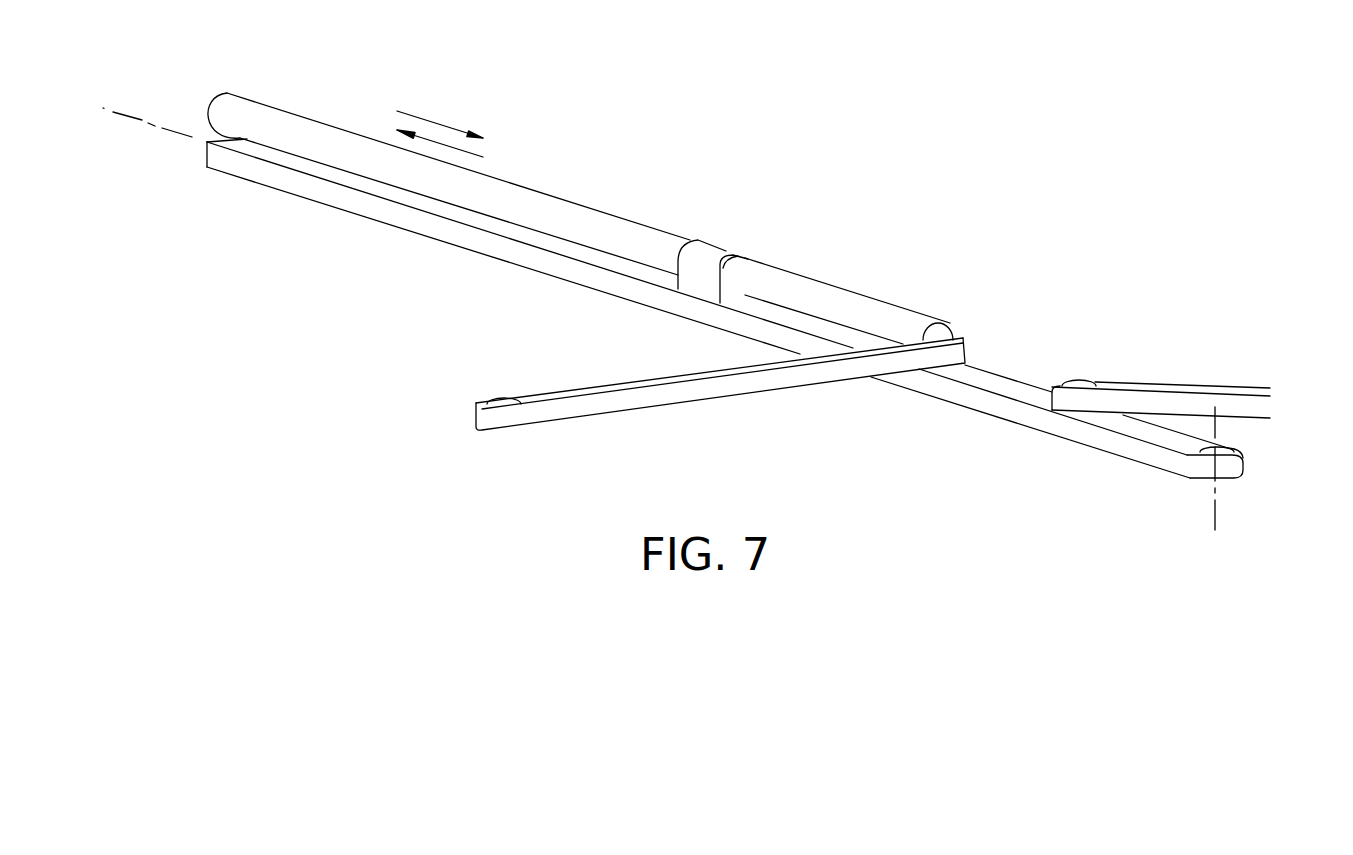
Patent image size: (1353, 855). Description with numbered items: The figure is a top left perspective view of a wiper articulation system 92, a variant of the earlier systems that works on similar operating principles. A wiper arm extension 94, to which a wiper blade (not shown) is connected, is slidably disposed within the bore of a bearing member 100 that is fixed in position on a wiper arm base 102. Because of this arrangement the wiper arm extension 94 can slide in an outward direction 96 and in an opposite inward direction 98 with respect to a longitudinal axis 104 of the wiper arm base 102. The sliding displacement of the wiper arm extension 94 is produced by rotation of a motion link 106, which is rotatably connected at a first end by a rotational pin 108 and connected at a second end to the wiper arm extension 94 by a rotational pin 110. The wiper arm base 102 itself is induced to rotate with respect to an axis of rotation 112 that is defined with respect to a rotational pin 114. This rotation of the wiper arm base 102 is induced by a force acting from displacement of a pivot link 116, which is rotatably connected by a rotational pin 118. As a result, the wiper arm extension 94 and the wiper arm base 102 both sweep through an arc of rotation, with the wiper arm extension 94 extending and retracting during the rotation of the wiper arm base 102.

The wiper articulation system 92 is at (835, 130).
The wiper arm extension 94 is at (835, 306).
The outward direction 96 is at (481, 156).
The inward direction 98 is at (432, 120).
The bearing member 100 is at (718, 253).
The wiper arm base 102 is at (987, 400).
The longitudinal axis 104 is at (113, 112).
The motion link 106 is at (612, 400).
The rotational pin 108 is at (507, 398).
The rotational pin 110 is at (945, 326).
The axis of rotation 112 is at (1215, 510).
The rotational pin 114 is at (1234, 452).
The pivot link 116 is at (1193, 388).
The rotational pin 118 is at (1076, 380).